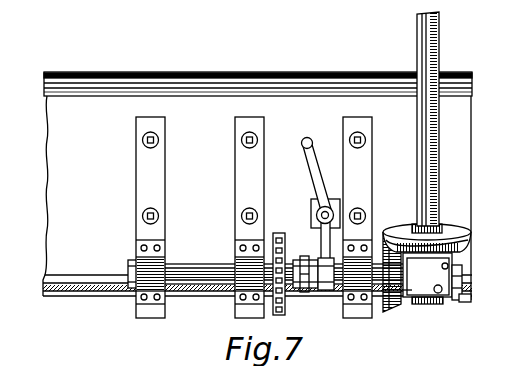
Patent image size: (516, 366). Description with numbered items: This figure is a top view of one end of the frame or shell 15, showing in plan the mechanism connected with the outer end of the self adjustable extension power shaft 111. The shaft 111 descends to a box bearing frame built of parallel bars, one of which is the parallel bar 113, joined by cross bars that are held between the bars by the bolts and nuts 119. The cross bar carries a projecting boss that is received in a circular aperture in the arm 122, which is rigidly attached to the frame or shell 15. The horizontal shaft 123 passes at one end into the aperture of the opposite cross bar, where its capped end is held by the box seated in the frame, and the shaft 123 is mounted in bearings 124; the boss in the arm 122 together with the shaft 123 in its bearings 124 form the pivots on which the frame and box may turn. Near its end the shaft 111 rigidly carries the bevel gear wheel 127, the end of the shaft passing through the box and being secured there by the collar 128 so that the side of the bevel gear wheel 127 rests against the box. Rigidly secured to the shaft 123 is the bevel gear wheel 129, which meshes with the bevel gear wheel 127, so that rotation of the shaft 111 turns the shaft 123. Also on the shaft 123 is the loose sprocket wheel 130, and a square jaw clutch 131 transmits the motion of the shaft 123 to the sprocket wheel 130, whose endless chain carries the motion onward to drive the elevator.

The wall or frame 15 is at (257, 186).
The self adjustable extension power shaft 111 is at (440, 40).
The parallel bar 113 is at (410, 292).
The bolts and nuts 119 is at (457, 261).
The arm 122 is at (468, 291).
The horizontal shaft 123 is at (122, 294).
The bearings 124 is at (213, 298).
The bevel gear wheel 127 is at (466, 225).
The collar 128 is at (426, 306).
The bevel gear wheel 129 is at (389, 312).
The loose sprocket wheel 130 is at (278, 316).
The square jaw clutch 131 is at (311, 292).